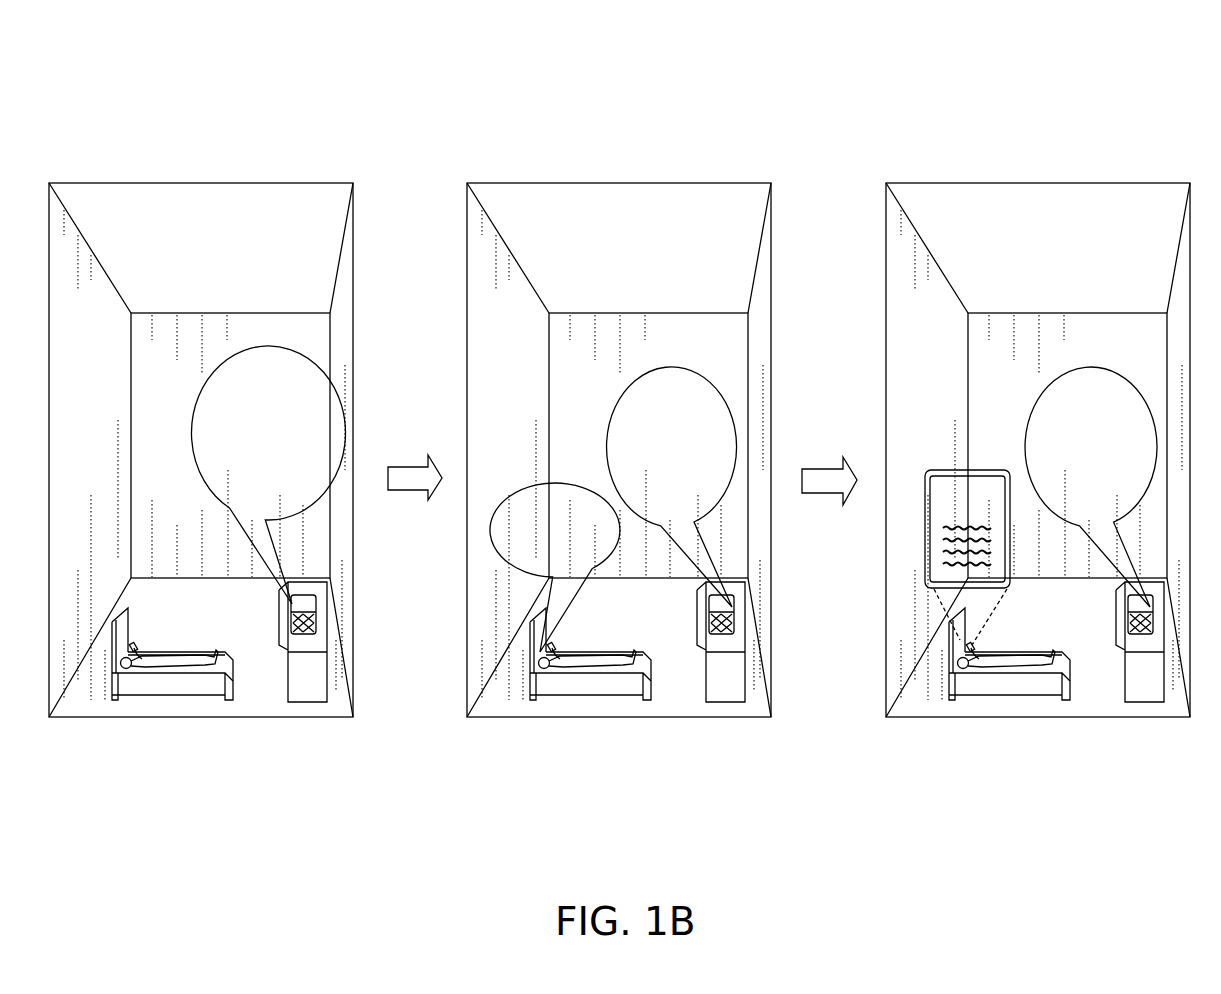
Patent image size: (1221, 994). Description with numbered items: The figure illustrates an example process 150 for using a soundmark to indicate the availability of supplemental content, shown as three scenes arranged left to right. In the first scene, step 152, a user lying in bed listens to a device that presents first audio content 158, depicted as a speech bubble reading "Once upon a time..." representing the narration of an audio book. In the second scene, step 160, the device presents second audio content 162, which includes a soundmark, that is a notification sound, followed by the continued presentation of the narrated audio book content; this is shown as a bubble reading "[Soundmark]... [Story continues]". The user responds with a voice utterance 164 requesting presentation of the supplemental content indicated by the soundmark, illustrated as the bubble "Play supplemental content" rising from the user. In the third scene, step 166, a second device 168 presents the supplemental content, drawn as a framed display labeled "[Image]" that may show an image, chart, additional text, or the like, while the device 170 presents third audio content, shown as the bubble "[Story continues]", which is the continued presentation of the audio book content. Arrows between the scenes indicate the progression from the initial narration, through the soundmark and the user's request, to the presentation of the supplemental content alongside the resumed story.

The process 150 is at (1088, 32).
The step 152 is at (278, 129).
The first audio content 158 is at (270, 346).
The step 160 is at (693, 129).
The second audio content 162 is at (665, 367).
The voice utterance 164 is at (556, 483).
The step 166 is at (1095, 129).
The second device 168 is at (970, 470).
The device 170 is at (1085, 368).